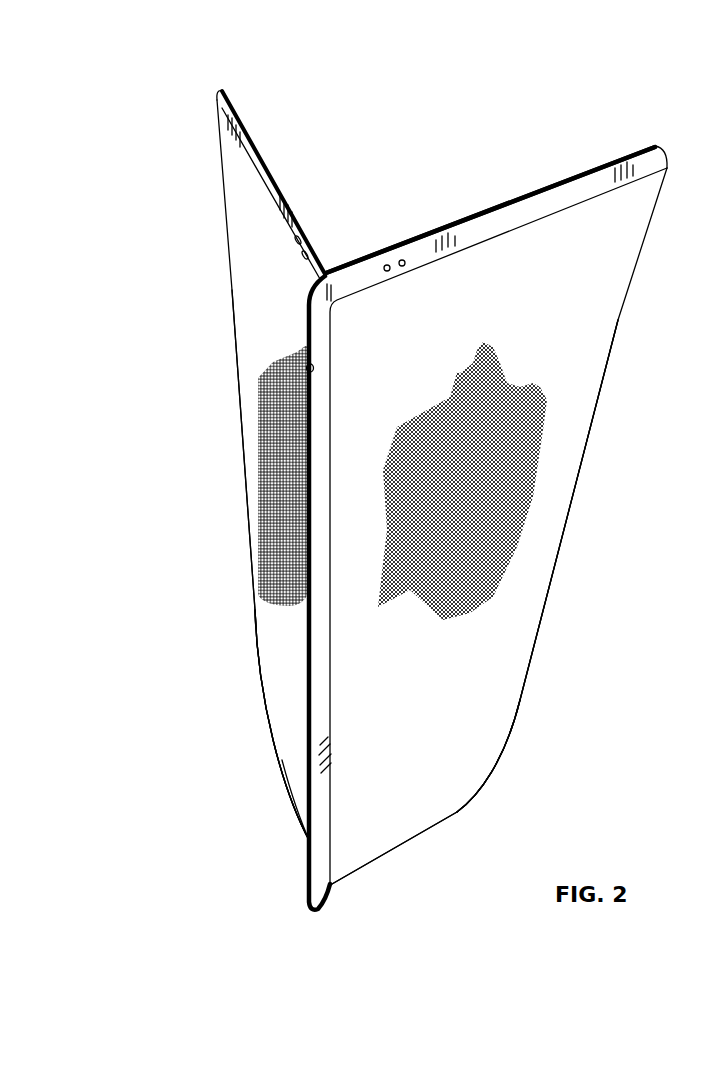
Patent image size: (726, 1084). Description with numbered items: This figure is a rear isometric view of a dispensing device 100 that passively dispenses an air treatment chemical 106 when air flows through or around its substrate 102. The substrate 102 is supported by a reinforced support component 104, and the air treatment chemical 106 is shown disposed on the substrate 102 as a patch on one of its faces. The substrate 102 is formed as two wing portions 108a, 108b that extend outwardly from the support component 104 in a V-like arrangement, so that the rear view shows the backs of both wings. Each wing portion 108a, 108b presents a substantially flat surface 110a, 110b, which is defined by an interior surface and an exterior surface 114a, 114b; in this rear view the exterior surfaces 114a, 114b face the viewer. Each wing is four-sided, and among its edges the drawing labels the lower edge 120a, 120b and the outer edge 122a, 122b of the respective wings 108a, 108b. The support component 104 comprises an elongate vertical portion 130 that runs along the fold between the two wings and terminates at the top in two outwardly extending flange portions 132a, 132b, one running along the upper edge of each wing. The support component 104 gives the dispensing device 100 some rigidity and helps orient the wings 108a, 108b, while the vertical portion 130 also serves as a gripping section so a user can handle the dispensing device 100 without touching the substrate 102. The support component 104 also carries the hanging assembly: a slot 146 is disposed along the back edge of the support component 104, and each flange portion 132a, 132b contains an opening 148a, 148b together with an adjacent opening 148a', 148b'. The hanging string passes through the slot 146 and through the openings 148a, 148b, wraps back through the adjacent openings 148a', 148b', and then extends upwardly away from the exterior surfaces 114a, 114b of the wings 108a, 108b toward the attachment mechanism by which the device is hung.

The dispensing device 100 is at (605, 101).
The substrate 102 is at (623, 267).
The reinforced support component 104 is at (582, 187).
The air treatment chemical 106 is at (496, 524).
The wing portion 108a is at (265, 653).
The wing portion 108b is at (515, 672).
The substantially flat surface 110a is at (278, 678).
The substantially flat surface 110b is at (502, 712).
The exterior surface 114a is at (278, 718).
The exterior surface 114b is at (487, 748).
The lower edge 120a is at (288, 790).
The lower edge 120b is at (368, 864).
The outer edge 122a is at (237, 407).
The outer edge 122b is at (565, 548).
The elongate vertical portion 130 is at (303, 480).
The flange portion 132a is at (250, 152).
The flange portion 132b is at (513, 213).
The slot 146 is at (295, 368).
The opening 148a is at (322, 210).
The adjacent opening 148a' is at (342, 237).
The opening 148b is at (427, 232).
The adjacent opening 148b' is at (443, 279).